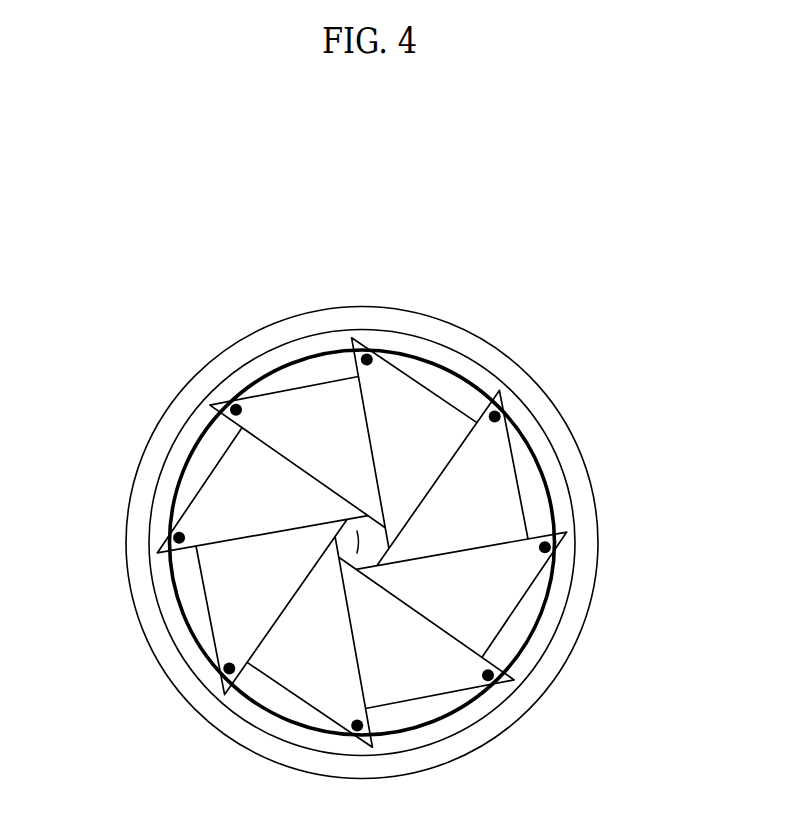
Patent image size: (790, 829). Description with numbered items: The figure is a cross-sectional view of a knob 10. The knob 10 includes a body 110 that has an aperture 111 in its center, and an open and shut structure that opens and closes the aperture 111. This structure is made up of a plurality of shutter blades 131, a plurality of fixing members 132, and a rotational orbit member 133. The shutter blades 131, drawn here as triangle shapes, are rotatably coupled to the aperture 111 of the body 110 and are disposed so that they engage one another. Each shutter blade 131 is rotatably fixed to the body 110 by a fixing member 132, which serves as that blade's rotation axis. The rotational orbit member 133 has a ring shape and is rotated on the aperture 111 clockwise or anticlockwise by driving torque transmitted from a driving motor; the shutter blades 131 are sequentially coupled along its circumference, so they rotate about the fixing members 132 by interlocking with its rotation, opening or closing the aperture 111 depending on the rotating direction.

The knob 10 is at (379, 172).
The body 110 is at (519, 360).
The aperture 111 is at (348, 540).
The shutter blade 131 is at (500, 483).
The fixing member 132 is at (551, 548).
The rotational orbit member 133 is at (426, 359).